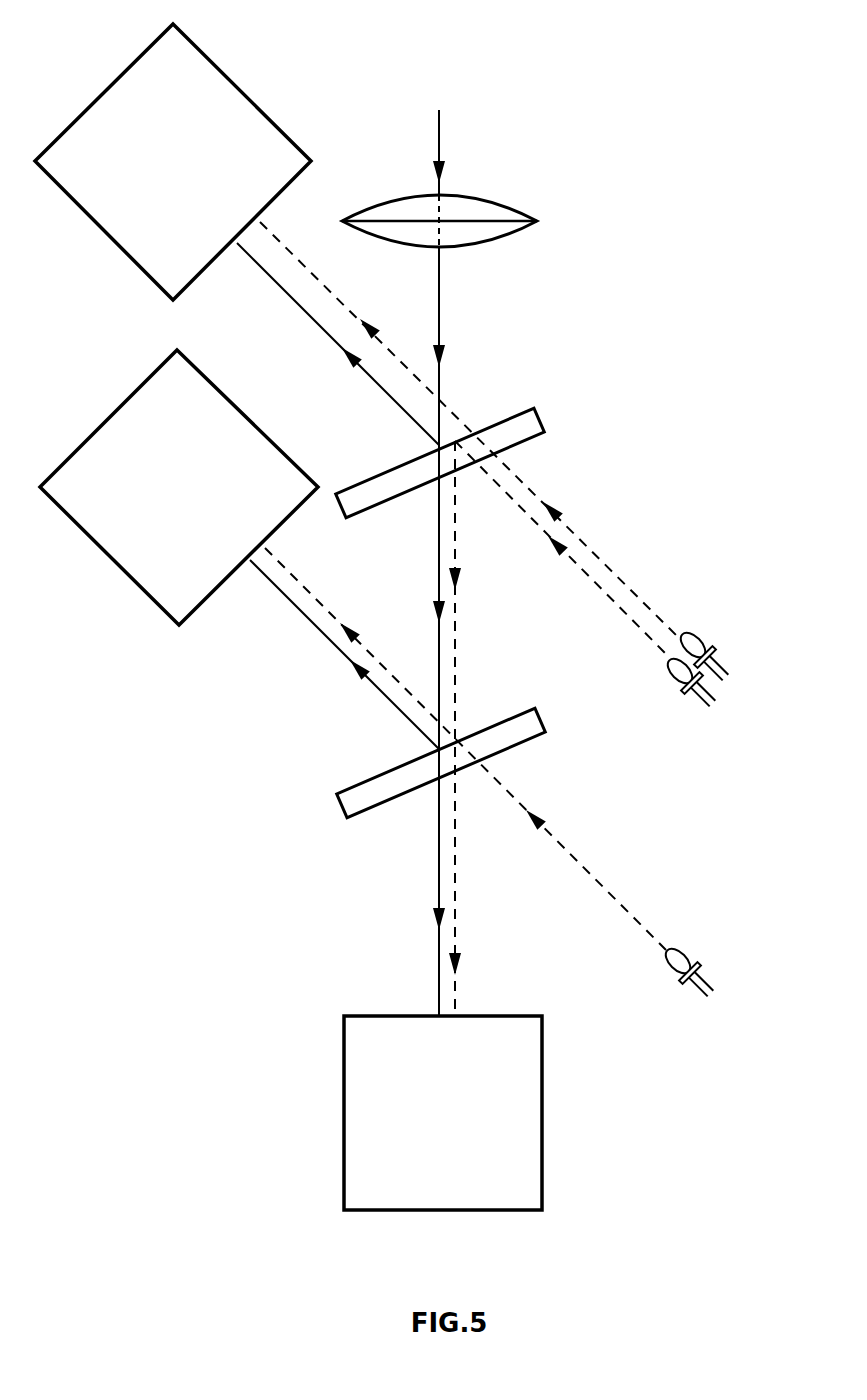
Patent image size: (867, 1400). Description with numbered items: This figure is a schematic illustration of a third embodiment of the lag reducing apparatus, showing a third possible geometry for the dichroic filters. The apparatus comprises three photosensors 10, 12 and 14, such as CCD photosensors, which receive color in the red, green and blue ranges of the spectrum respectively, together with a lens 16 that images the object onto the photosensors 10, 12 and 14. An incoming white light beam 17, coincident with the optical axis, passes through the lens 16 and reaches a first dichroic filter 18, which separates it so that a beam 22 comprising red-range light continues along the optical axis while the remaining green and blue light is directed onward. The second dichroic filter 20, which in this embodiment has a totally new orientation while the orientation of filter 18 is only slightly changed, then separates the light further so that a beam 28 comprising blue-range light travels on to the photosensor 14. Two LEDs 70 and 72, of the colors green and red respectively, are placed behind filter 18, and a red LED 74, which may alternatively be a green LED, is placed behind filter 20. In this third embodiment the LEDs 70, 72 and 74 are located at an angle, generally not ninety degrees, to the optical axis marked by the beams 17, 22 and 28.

The photosensor 10 is at (200, 50).
The photosensor 12 is at (148, 602).
The photosensor 14 is at (543, 1133).
The lens 16 is at (483, 193).
The incoming white light beam 17 is at (442, 312).
The dichroic filter 18 is at (541, 431).
The dichroic filter 20 is at (342, 807).
The beam 22 is at (440, 583).
The beam 28 is at (442, 857).
The LED 70 is at (698, 633).
The LED 72 is at (675, 680).
The red LED 74 is at (685, 953).